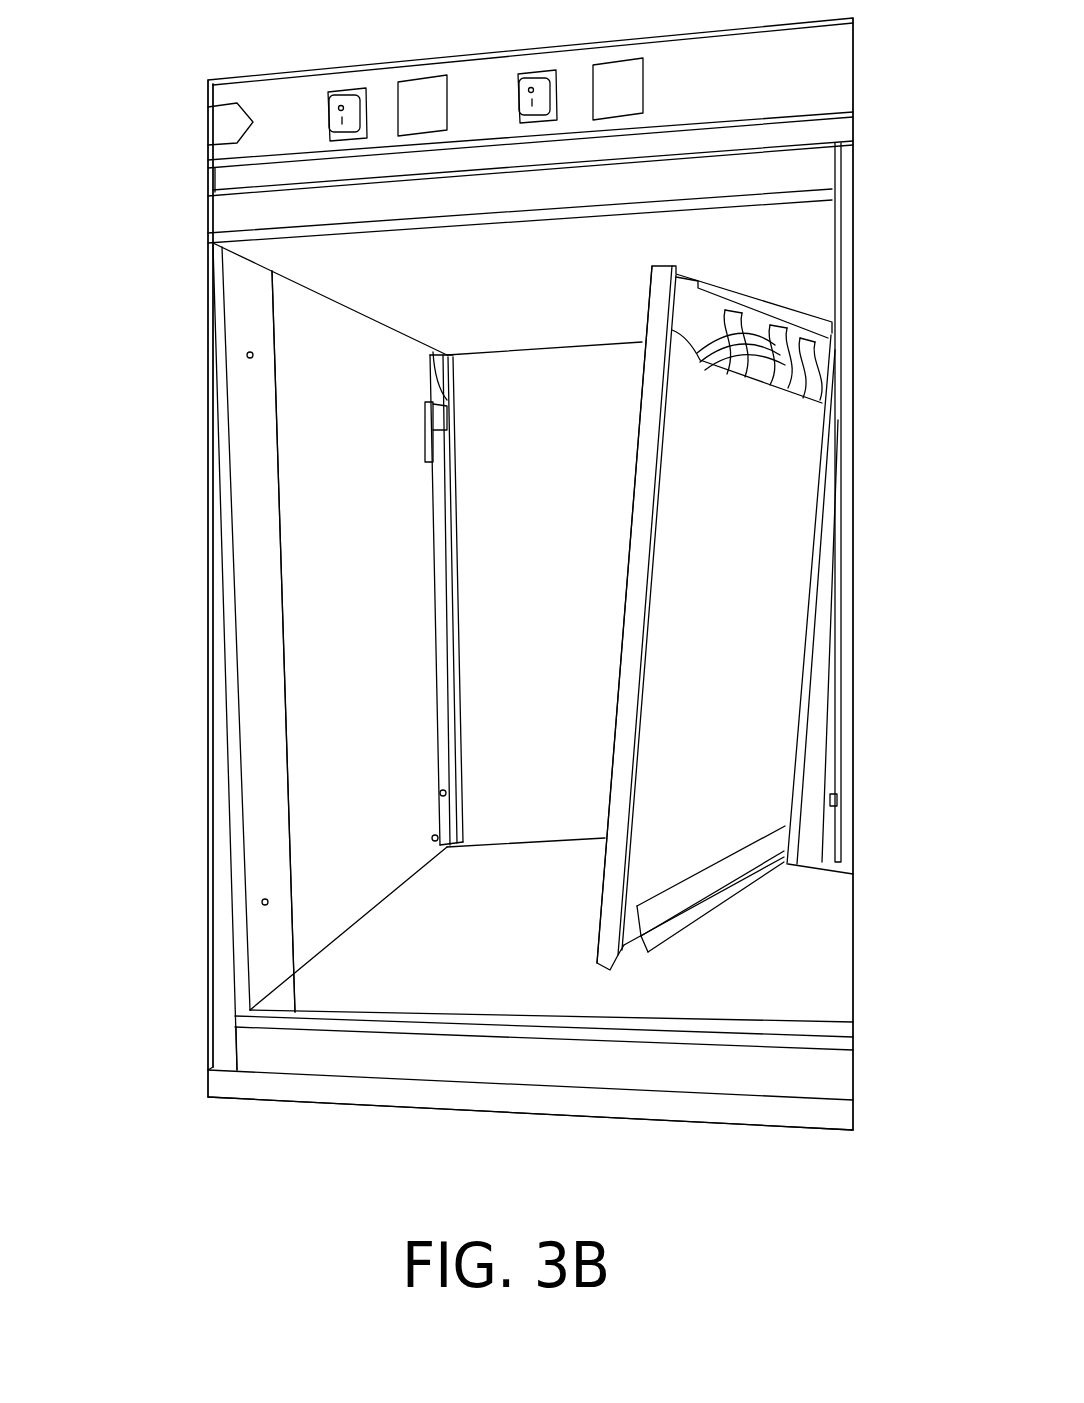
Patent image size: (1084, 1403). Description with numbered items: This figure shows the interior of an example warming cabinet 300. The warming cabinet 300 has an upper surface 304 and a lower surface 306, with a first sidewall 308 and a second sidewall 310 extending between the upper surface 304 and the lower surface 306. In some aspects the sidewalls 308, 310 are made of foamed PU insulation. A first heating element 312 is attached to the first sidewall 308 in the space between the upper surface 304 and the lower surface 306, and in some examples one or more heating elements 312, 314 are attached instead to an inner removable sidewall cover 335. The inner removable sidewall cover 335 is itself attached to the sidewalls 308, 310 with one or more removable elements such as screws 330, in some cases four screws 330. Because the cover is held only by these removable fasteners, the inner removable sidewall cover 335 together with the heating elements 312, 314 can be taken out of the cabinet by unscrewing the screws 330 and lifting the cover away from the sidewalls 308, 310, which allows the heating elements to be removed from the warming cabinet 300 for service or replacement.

The warming cabinet 300 is at (175, 203).
The upper surface 304 is at (700, 203).
The lower surface 306 is at (387, 1007).
The first sidewall 308 is at (214, 438).
The second sidewall 310 is at (836, 540).
The first heating element 312 is at (270, 570).
The heating element 314 is at (743, 608).
The screws 330 is at (280, 257).
The inner removable sidewall cover 335 is at (315, 702).